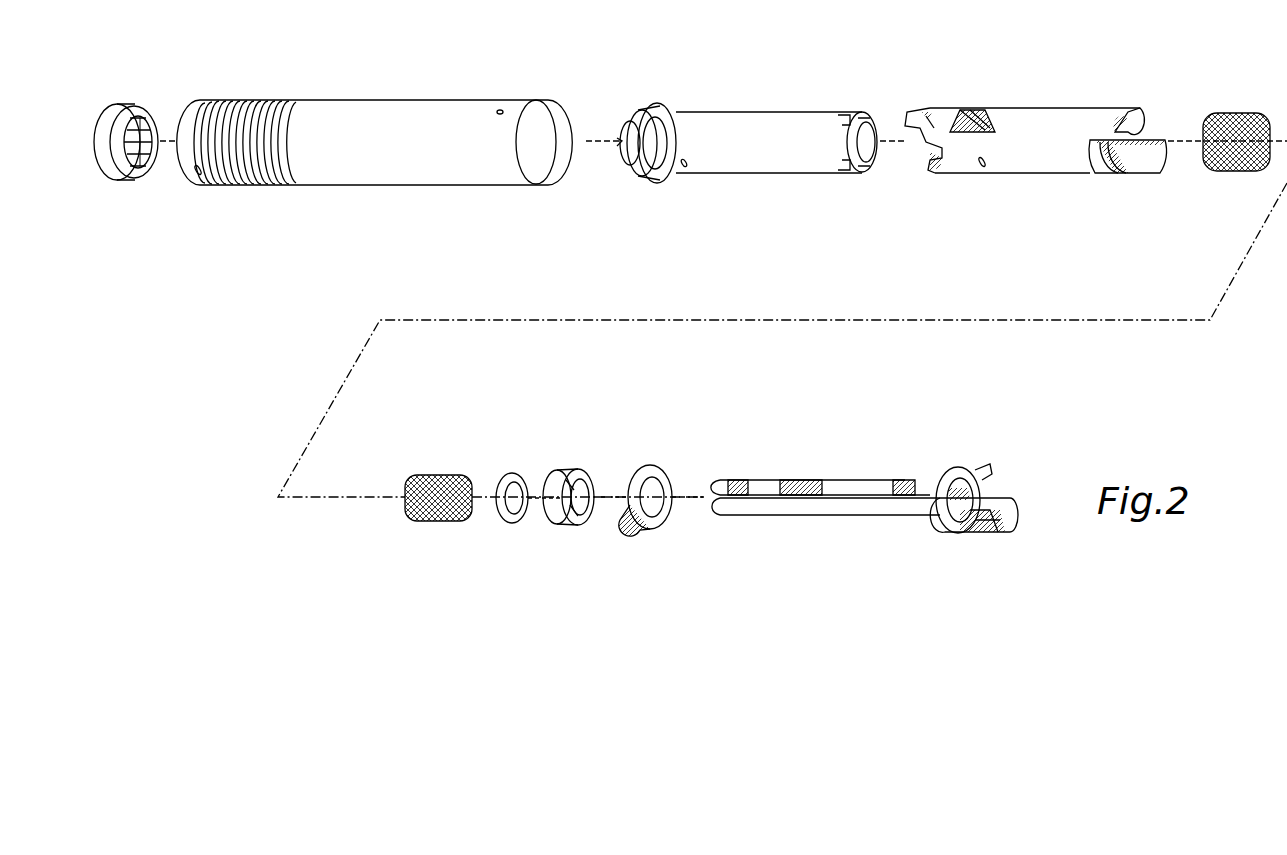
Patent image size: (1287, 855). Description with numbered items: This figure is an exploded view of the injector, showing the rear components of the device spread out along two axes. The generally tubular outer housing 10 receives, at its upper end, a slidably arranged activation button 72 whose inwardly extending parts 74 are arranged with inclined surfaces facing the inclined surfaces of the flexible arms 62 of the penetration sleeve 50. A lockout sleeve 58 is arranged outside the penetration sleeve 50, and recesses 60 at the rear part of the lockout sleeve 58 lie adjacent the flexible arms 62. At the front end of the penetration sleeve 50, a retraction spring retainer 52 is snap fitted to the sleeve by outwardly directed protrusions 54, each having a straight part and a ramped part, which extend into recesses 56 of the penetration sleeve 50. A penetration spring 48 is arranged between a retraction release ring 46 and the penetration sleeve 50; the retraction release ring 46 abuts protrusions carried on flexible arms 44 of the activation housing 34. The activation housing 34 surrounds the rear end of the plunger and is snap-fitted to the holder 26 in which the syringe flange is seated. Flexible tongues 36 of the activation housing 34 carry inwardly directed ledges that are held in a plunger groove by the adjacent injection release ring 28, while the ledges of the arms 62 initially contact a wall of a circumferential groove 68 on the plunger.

The outer housing 10 is at (388, 170).
The activation button 72 is at (120, 172).
The inwardly extending parts 74 is at (136, 128).
The flexible arms 62 is at (654, 122).
The penetration sleeve 50 is at (766, 125).
The recesses 56 is at (836, 166).
The recesses 60 is at (919, 122).
The lockout sleeve 58 is at (1048, 125).
The penetration spring 48 is at (432, 522).
The retraction release ring 46 is at (507, 524).
The outwardly directed protrusions 54 is at (560, 486).
The retraction spring retainer 52 is at (574, 520).
The injection release ring 28 is at (630, 487).
The circumferential groove 68 is at (737, 494).
The flexible arms 44 is at (802, 490).
The flexible tongues 36 is at (912, 487).
The holder 26 is at (976, 490).
The activation housing 34 is at (853, 516).